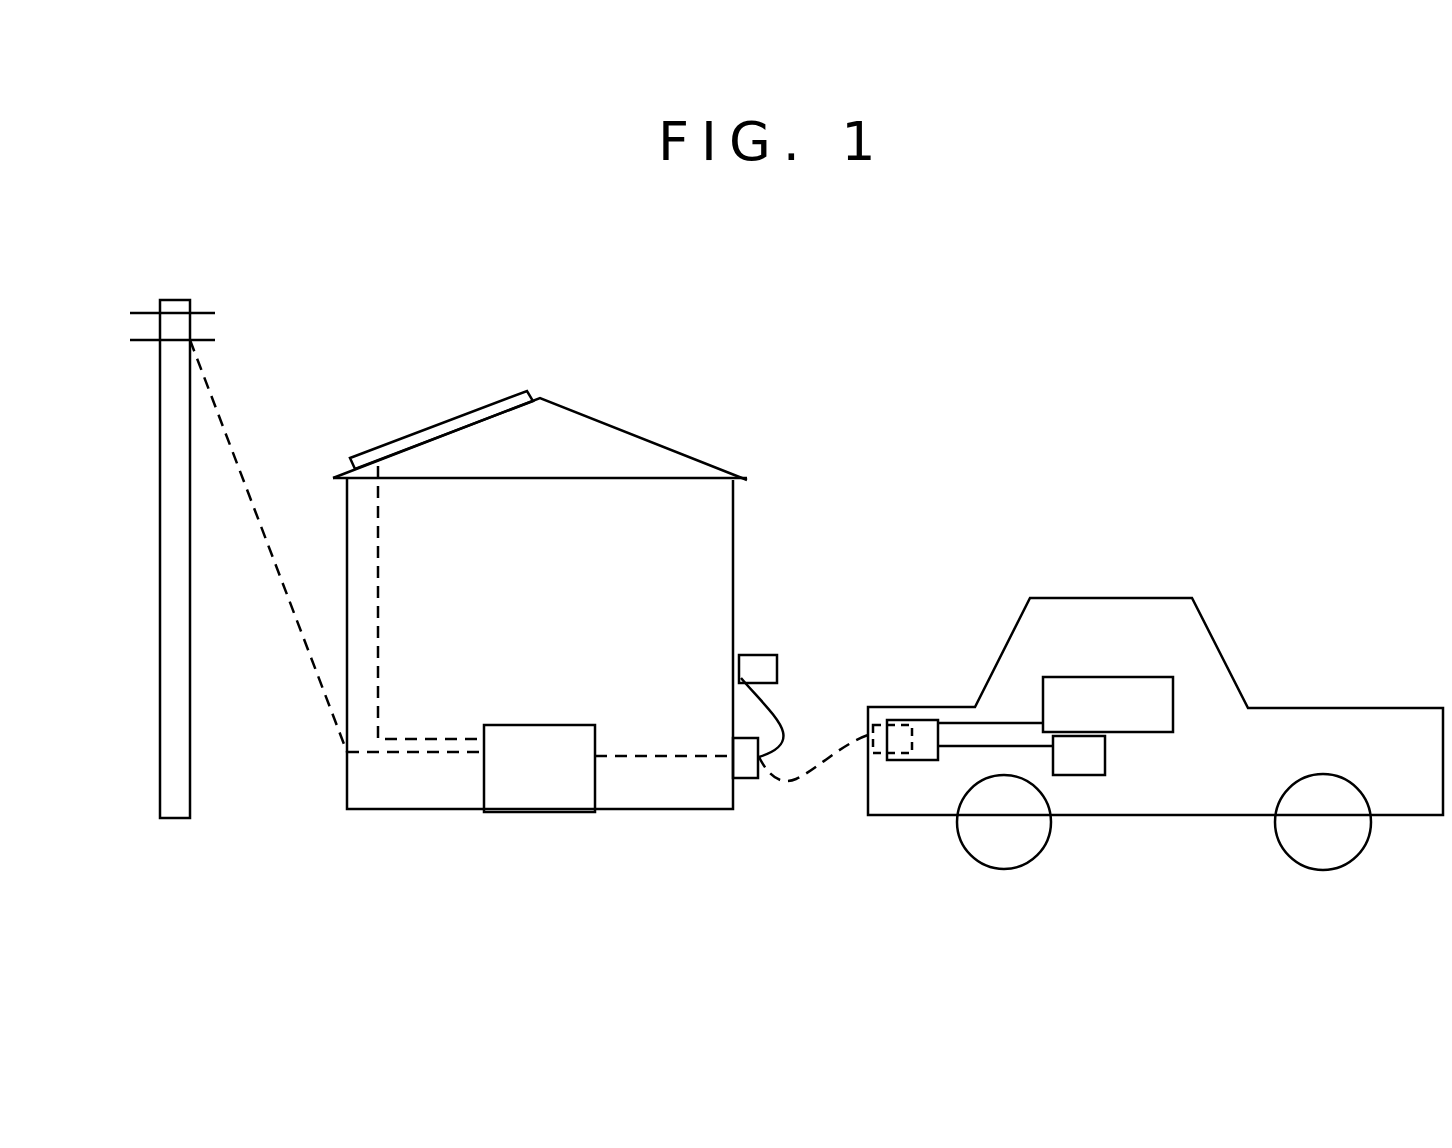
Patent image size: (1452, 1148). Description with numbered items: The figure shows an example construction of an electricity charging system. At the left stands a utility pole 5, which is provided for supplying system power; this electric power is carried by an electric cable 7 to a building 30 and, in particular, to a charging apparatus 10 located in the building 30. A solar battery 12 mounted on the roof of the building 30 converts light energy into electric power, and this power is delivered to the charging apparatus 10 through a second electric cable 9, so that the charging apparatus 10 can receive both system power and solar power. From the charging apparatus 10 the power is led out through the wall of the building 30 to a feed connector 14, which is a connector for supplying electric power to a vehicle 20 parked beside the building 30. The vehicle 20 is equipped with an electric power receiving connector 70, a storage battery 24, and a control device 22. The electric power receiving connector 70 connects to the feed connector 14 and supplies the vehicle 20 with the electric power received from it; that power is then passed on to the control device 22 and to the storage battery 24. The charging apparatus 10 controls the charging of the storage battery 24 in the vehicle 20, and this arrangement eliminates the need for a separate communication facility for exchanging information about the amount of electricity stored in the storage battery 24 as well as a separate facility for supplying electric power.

The utility pole 5 is at (190, 302).
The electric cable 7 is at (255, 487).
The electric cable 9 is at (378, 598).
The charging apparatus 10 is at (567, 724).
The solar battery 12 is at (480, 408).
The feed connector 14 is at (777, 670).
The vehicle 20 is at (1085, 598).
The control device 22 is at (1063, 676).
The storage battery 24 is at (1105, 755).
The building 30 is at (645, 441).
The electric power receiving connector 70 is at (912, 760).